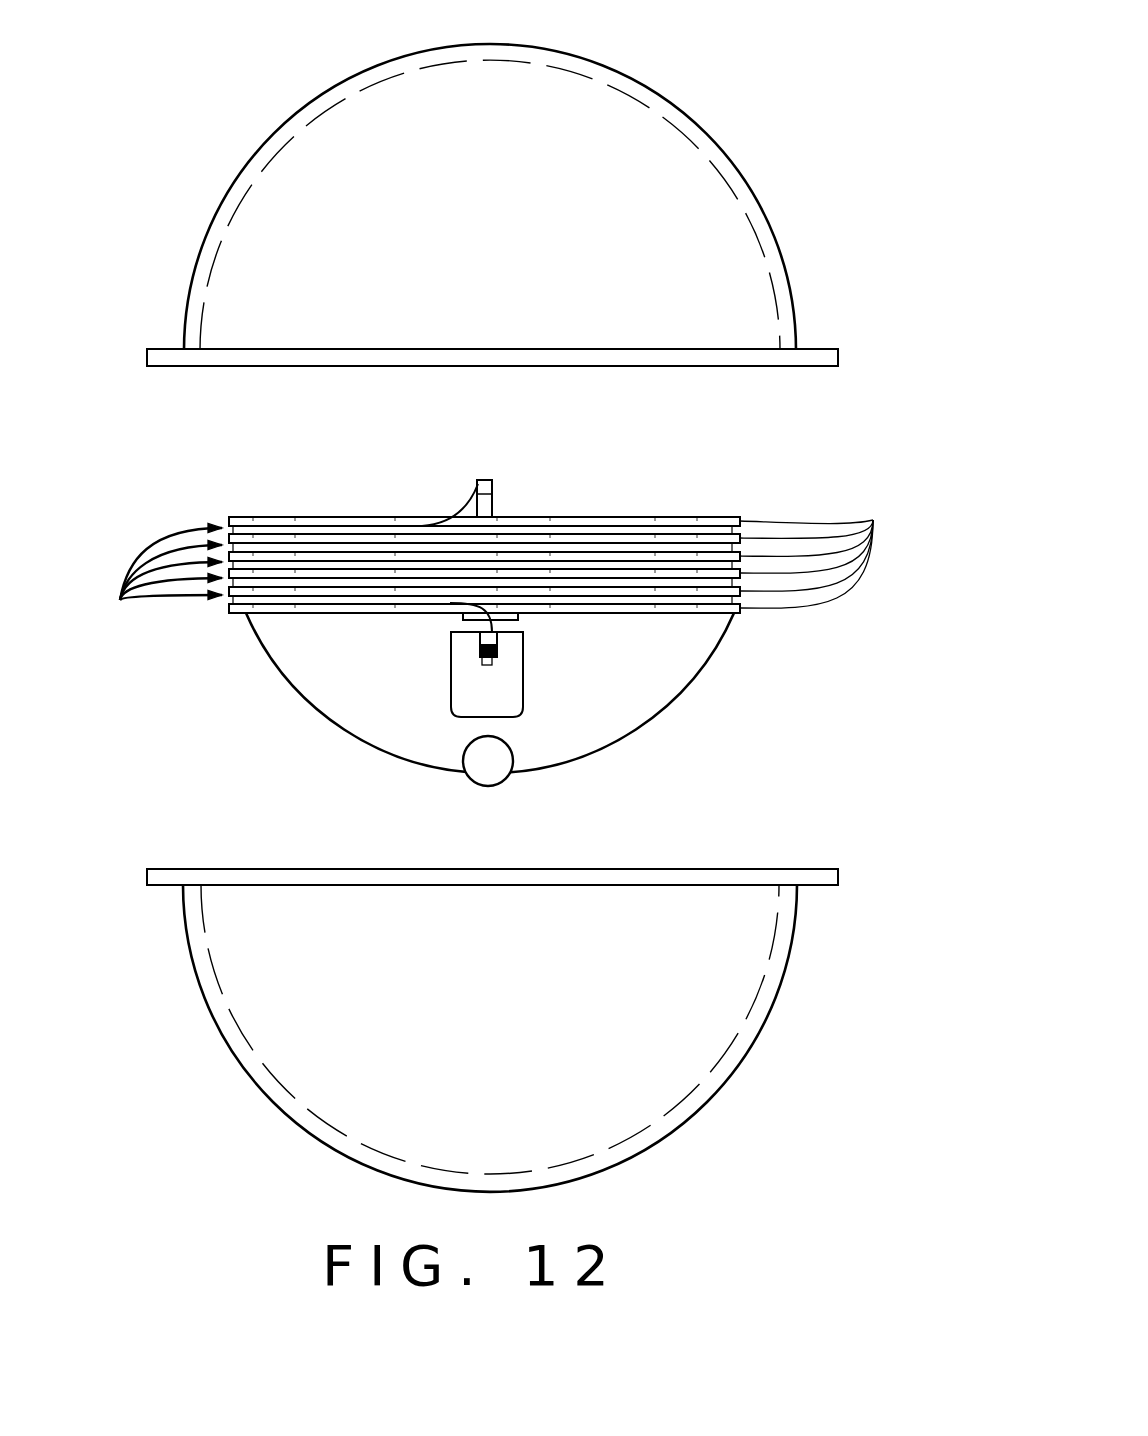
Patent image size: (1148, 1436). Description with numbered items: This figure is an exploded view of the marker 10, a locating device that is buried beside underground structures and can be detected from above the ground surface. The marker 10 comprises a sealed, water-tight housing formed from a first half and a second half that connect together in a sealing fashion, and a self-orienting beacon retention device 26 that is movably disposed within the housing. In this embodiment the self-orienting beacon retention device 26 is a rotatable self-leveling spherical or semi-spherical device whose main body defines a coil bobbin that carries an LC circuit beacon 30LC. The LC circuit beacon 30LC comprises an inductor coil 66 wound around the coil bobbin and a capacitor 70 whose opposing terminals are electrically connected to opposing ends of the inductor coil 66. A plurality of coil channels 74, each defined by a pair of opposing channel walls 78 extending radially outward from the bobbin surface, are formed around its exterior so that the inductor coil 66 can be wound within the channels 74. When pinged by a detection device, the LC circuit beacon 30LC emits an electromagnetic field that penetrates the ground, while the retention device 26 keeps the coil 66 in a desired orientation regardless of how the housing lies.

The marker 10 is at (220, 137).
The self-orienting beacon retention device 26 is at (168, 500).
The LC circuit beacon 30LC is at (628, 467).
The inductor coil 66 is at (458, 502).
The capacitor 70 is at (492, 498).
The coil channels 74 is at (161, 580).
The channel walls 78 is at (873, 522).